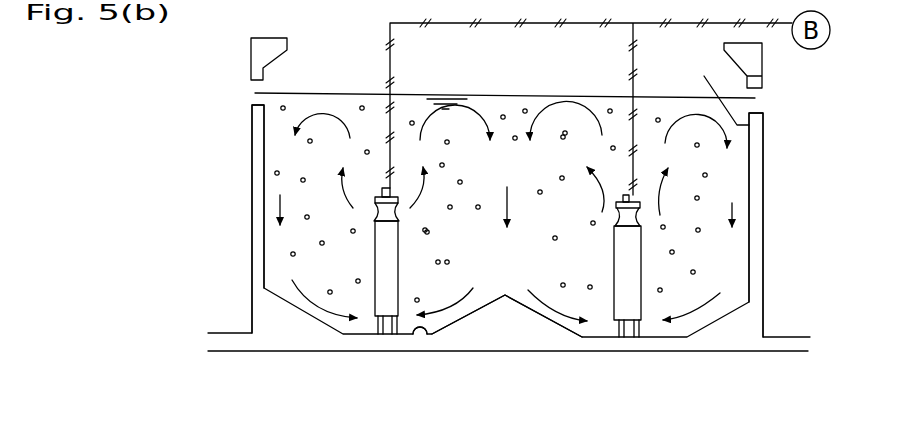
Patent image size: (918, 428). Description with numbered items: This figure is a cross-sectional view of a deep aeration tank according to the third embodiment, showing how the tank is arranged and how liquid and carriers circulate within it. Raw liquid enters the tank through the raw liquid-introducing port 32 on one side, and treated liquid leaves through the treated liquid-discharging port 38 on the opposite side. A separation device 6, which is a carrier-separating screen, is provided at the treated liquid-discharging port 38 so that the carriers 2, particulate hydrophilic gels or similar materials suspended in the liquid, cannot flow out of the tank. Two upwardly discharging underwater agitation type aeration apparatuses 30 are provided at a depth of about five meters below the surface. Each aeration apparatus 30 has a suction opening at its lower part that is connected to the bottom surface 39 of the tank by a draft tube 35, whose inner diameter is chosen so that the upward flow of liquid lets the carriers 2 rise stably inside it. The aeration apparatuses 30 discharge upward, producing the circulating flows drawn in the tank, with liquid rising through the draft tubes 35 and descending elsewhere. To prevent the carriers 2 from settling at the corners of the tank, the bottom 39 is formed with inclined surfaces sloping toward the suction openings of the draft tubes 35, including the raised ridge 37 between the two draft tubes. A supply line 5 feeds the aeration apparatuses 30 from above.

The carriers 2 is at (733, 266).
The supply pipe 5 is at (566, 24).
The separation device 6 is at (712, 87).
The underwater agitation type aeration apparatus 30 is at (299, 250).
The raw liquid-introducing port 32 is at (252, 98).
The draft tube 35 is at (373, 268).
The bottom ridge 37 is at (513, 318).
The treated liquid-discharging port 38 is at (766, 108).
The bottom surface 39 is at (412, 340).